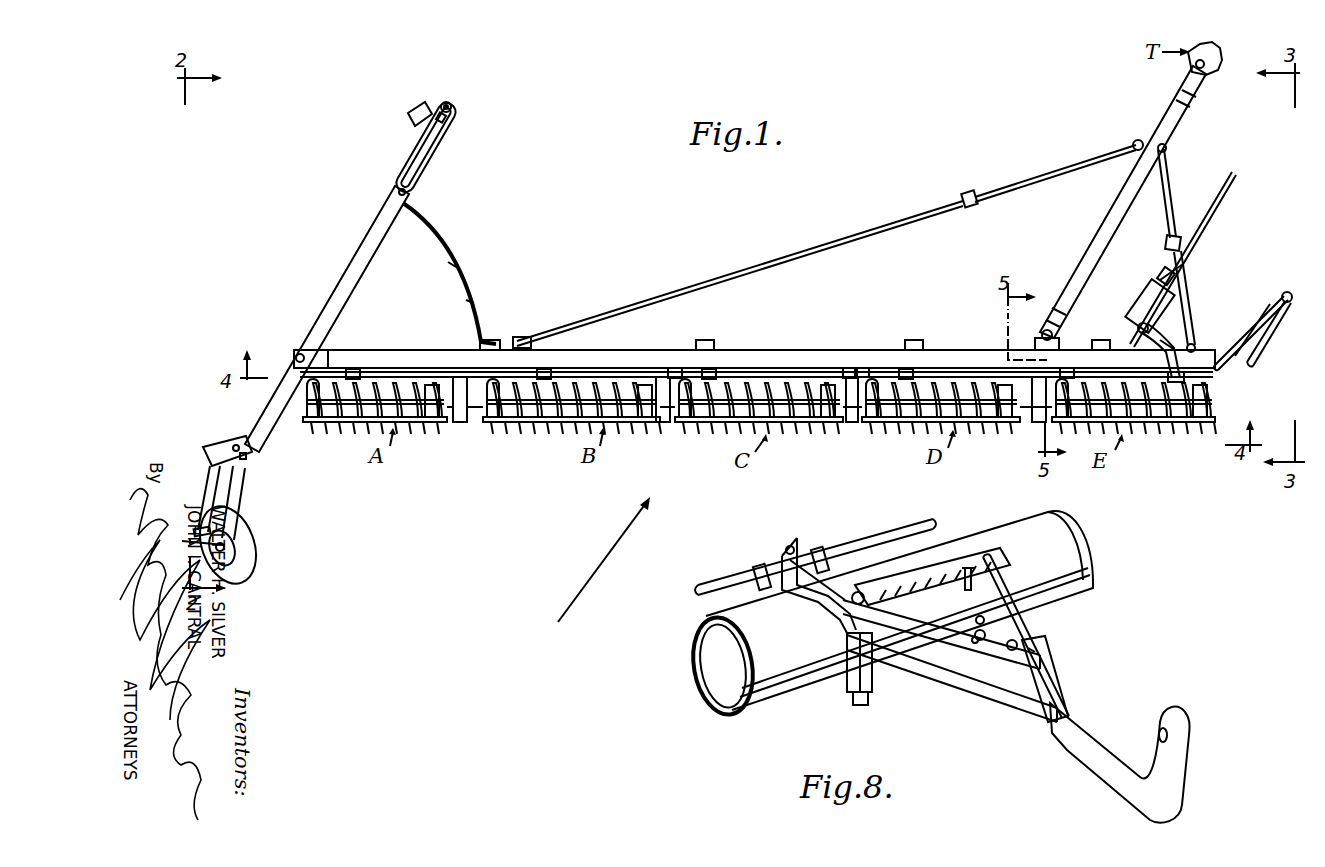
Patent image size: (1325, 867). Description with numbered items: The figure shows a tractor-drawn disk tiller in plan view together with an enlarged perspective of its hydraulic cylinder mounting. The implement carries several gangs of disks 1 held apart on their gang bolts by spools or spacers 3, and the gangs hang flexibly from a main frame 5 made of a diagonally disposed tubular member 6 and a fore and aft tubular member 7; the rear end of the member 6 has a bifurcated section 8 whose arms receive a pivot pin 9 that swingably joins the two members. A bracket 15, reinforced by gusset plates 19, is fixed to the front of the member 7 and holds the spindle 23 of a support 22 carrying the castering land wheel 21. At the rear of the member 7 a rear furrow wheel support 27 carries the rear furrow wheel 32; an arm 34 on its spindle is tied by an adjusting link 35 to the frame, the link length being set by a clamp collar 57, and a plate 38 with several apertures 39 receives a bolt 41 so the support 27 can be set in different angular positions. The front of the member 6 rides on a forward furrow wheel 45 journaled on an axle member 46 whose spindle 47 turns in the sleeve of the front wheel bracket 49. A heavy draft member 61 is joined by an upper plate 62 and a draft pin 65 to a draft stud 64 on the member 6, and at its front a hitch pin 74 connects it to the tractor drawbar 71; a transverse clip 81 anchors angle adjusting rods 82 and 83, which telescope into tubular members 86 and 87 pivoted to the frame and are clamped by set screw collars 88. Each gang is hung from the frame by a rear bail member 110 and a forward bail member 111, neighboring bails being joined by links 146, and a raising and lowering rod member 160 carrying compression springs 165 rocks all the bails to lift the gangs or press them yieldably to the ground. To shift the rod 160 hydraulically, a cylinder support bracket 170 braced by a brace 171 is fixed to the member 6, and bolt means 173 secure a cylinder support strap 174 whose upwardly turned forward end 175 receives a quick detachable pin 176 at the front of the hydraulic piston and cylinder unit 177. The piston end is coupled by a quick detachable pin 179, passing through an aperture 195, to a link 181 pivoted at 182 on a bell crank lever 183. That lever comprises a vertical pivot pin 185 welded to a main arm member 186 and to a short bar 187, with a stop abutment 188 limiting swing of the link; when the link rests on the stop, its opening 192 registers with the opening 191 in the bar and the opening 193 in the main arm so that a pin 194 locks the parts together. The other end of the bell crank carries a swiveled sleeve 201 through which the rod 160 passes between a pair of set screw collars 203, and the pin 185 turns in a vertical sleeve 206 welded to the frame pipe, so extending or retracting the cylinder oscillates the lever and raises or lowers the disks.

In FIG. 1, the disks 1 is at (339, 424).
In FIG. 1, the spools or spacers 3 is at (428, 424).
In FIG. 1, the main frame 5 is at (820, 348).
In FIG. 1, the diagonally disposed tubular member 6 is at (862, 367).
In FIG. 1, the fore and aft tubular member 7 is at (364, 238).
In FIG. 1, the bifurcated section 8 is at (340, 344).
In FIG. 1, the pivot pin 9 is at (298, 353).
In FIG. 1, the bracket 15 is at (412, 151).
In FIG. 1, the gusset plates 19 is at (447, 118).
In FIG. 1, the land wheel 21 is at (440, 143).
In FIG. 1, the support 22 is at (417, 119).
In FIG. 1, the spindle 23 is at (452, 104).
In FIG. 1, the rear furrow wheel support 27 is at (243, 493).
In FIG. 1, the rear furrow wheel 32 is at (251, 525).
In FIG. 1, the arm 34 is at (192, 541).
In FIG. 1, the adjusting link 35 is at (205, 491).
In FIG. 1, the plate 38 is at (213, 442).
In FIG. 1, the apertures 39 is at (234, 445).
In FIG. 1, the bolt 41 is at (248, 456).
In FIG. 1, the forward furrow wheel 45 is at (1254, 369).
In FIG. 1, the axle member 46 is at (1278, 295).
In FIG. 1, the spindle 47 is at (1288, 292).
In FIG. 1, the front wheel support member or bracket 49 is at (1240, 331).
In FIG. 1, the adjusting set screw clamp collar 57 is at (198, 527).
In FIG. 1, the draft member 61 is at (1096, 229).
In FIG. 1, the upper plate 62 is at (1054, 345).
In FIG. 1, the draft stud 64 is at (1008, 345).
In FIG. 1, the draft pin 65 is at (1043, 332).
In FIG. 1, the drawbar 71 is at (1220, 72).
In FIG. 1, the hitch pin 74 is at (1196, 67).
In FIG. 1, the transverse clip 81 is at (1138, 136).
In FIG. 1, the angle adjusting rod 82 is at (1092, 152).
In FIG. 1, the angle adjusting rod 83 is at (1172, 192).
In FIG. 1, the tubular member 86 is at (860, 226).
In FIG. 1, the tubular member 87 is at (1188, 292).
In FIG. 1, the clamping set screw collars 88 is at (969, 192).
In FIG. 1, the bail member 110 is at (676, 367).
In FIG. 1, the bail member 111 is at (650, 382).
In FIG. 1, the link 146 is at (500, 352).
In FIG. 1, the raising and lowering rod member 160 is at (618, 369).
In FIG. 8, the raising and lowering rod member 160 is at (890, 528).
In FIG. 1, the compression spring 165 is at (353, 371).
In FIG. 8, the cylinder support bracket 170 is at (1075, 701).
In FIG. 8, the brace 171 is at (935, 673).
In FIG. 8, the bolt means 173 is at (1035, 651).
In FIG. 8, the cylinder support strap 174 is at (1100, 783).
In FIG. 8, the upwardly turned forward end 175 is at (1176, 760).
In FIG. 1, the quick detachable pin 176 is at (1186, 276).
In FIG. 1, the hydraulic piston and cylinder unit 177 is at (1152, 285).
In FIG. 1, the quick detachable pin 179 is at (1158, 317).
In FIG. 8, the link 181 is at (905, 641).
In FIG. 8, the pivot 182 is at (845, 603).
In FIG. 1, the bell crank lever 183 is at (1176, 340).
In FIG. 8, the bell crank lever 183 is at (810, 599).
In FIG. 8, the pivot pin 185 is at (860, 591).
In FIG. 8, the main arm member 186 is at (933, 575).
In FIG. 8, the short bar 187 is at (852, 673).
In FIG. 8, the stop abutment 188 is at (968, 568).
In FIG. 8, the opening 191 is at (986, 620).
In FIG. 8, the opening 192 is at (975, 646).
In FIG. 8, the opening 193 is at (998, 576).
In FIG. 1, the pin 194 is at (1163, 342).
In FIG. 8, the aperture 195 is at (1018, 647).
In FIG. 1, the swiveled sleeve 201 is at (1168, 377).
In FIG. 8, the swiveled sleeve 201 is at (790, 550).
In FIG. 8, the set screw collars 203 is at (759, 569).
In FIG. 8, the vertical sleeve 206 is at (859, 705).